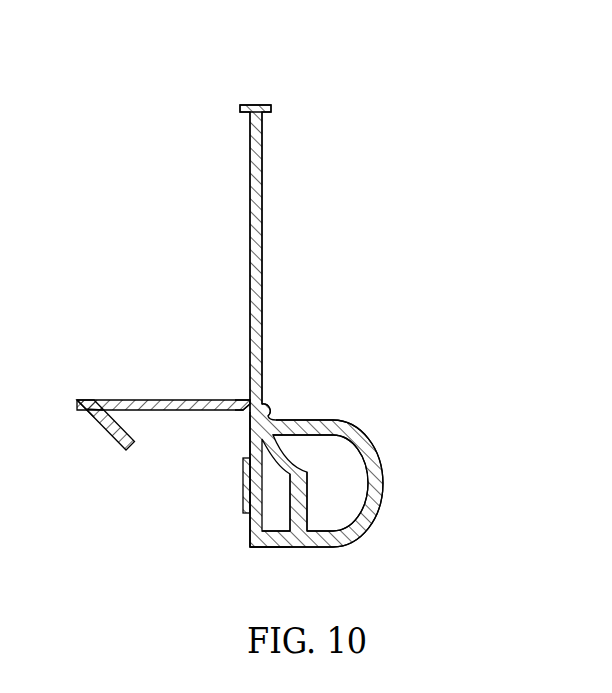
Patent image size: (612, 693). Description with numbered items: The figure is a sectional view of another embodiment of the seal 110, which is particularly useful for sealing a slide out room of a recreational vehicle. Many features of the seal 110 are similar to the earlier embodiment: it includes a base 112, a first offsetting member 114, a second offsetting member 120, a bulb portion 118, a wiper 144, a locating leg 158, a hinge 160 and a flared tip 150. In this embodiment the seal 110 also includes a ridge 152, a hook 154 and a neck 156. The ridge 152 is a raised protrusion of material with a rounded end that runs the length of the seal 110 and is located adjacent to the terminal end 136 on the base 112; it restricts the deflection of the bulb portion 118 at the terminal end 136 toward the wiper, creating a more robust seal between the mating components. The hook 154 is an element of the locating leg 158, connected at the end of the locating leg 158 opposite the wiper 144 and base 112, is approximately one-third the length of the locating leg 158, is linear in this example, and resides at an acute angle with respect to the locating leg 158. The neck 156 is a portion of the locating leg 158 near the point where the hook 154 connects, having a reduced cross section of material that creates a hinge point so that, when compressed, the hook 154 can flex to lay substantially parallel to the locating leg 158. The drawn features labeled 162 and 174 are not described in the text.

The seal 110 is at (440, 159).
The base 112 is at (249, 450).
The first offsetting member 114 is at (266, 549).
The bulb portion 118 is at (368, 436).
The second offsetting member 120 is at (318, 549).
The terminal end 136 is at (280, 418).
The wiper 144 is at (263, 129).
The flared tip 150 is at (258, 104).
The ridge 152 is at (268, 406).
The hook 154 is at (100, 430).
The neck 156 is at (103, 400).
The locating leg 158 is at (137, 400).
The hinge 160 is at (249, 417).
The arm tip 162 is at (249, 401).
The pad 174 is at (242, 499).